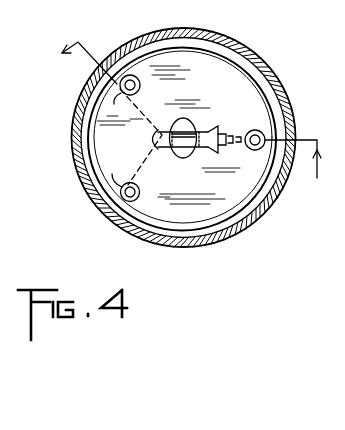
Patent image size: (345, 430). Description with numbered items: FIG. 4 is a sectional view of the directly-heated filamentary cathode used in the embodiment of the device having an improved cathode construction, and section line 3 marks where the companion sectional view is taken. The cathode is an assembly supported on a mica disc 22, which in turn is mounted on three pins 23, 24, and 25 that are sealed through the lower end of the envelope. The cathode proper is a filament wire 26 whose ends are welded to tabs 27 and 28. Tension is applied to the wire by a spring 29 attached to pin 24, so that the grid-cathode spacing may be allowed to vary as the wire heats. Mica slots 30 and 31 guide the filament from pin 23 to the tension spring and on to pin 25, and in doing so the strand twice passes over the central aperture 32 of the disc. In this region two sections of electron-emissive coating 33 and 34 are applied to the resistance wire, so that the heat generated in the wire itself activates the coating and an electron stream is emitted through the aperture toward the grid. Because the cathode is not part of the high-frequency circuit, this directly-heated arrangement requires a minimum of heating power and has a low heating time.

The section line 3— 3 is at (199, 104).
The mica disc 22 is at (255, 107).
The pin 23 is at (140, 86).
The pin 24 is at (252, 150).
The pin 25 is at (127, 202).
The filament wire 26 is at (170, 126).
The tab 27 is at (115, 171).
The tab 28 is at (114, 107).
The spring 29 is at (236, 138).
The mica slot 30 is at (150, 144).
The mica slot 31 is at (212, 148).
The central aperture 32 is at (191, 159).
The section of coating 33 is at (177, 158).
The section of coating 34 is at (183, 127).